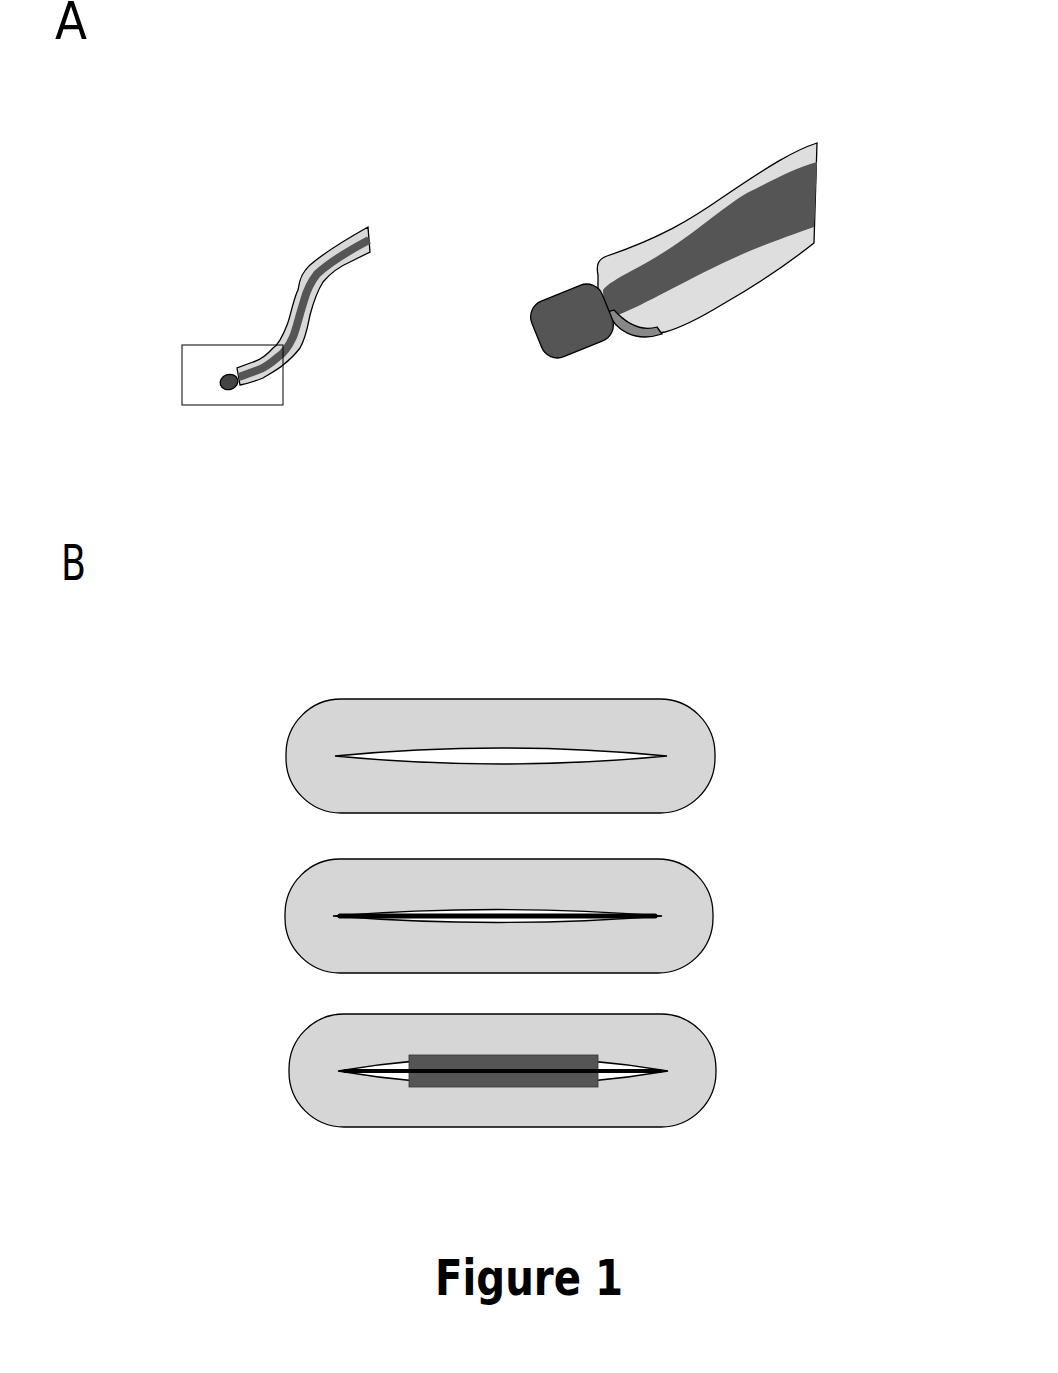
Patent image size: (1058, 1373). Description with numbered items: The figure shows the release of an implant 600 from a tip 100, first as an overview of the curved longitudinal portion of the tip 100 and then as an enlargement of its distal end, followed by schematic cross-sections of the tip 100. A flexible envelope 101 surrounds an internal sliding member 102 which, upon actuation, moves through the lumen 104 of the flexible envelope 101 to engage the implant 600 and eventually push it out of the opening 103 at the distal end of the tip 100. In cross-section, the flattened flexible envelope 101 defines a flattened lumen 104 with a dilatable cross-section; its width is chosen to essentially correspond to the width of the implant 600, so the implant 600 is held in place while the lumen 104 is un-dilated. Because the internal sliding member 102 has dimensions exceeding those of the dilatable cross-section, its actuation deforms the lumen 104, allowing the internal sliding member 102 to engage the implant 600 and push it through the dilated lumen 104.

In FIG. 1A, the tip 100 is at (275, 283).
In FIG. 1A, the flexible envelope 101 is at (738, 198).
In FIG. 1B, the flexible envelope 101 is at (665, 718).
In FIG. 1A, the internal sliding member 102 is at (688, 283).
In FIG. 1B, the internal sliding member 102 is at (403, 1057).
In FIG. 1A, the opening 103 is at (650, 328).
In FIG. 1B, the lumen 104 is at (453, 755).
In FIG. 1A, the implant 600 is at (548, 329).
In FIG. 1B, the implant 600 is at (655, 915).